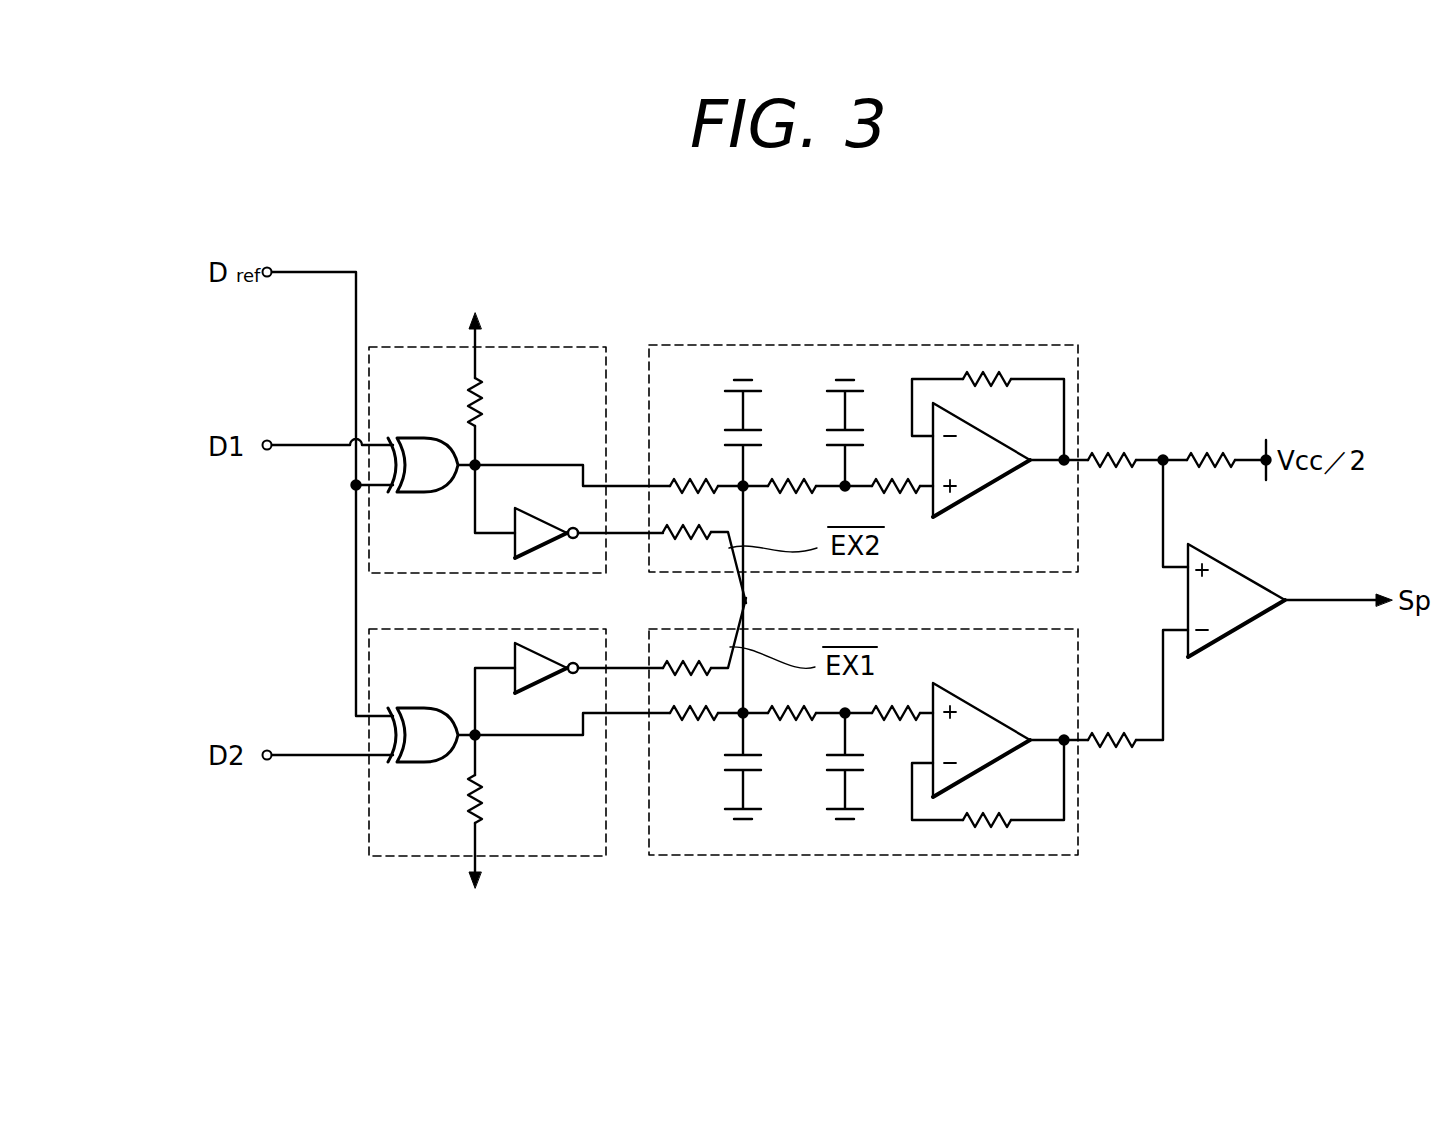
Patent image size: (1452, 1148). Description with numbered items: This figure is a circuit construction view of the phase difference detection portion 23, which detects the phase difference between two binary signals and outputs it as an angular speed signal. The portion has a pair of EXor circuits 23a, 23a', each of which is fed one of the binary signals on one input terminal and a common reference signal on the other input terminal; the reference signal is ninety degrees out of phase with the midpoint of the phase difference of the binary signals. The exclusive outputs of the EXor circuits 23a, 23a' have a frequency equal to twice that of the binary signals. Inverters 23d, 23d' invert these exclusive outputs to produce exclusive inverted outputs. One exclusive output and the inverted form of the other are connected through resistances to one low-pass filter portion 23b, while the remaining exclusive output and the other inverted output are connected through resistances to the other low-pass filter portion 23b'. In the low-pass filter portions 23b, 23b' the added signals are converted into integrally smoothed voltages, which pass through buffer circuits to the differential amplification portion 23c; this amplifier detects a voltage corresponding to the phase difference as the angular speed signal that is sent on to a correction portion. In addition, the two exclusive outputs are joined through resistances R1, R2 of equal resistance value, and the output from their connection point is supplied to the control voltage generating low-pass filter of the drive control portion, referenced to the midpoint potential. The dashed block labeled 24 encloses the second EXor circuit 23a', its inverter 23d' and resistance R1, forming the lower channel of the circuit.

The phase difference detection portion 23 is at (580, 345).
The EXor circuit 23a is at (423, 431).
The EXor circuit 23a' is at (415, 811).
The low-pass filter portion 23b is at (868, 418).
The low-pass filter portion 23b' is at (868, 781).
The differential amplification portion 23c is at (1253, 638).
The inverter 23d is at (572, 559).
The inverter 23d' is at (493, 668).
The second exclusive-OR circuit block 24 is at (587, 857).
The resistance R1 is at (498, 811).
The resistance R2 is at (498, 389).